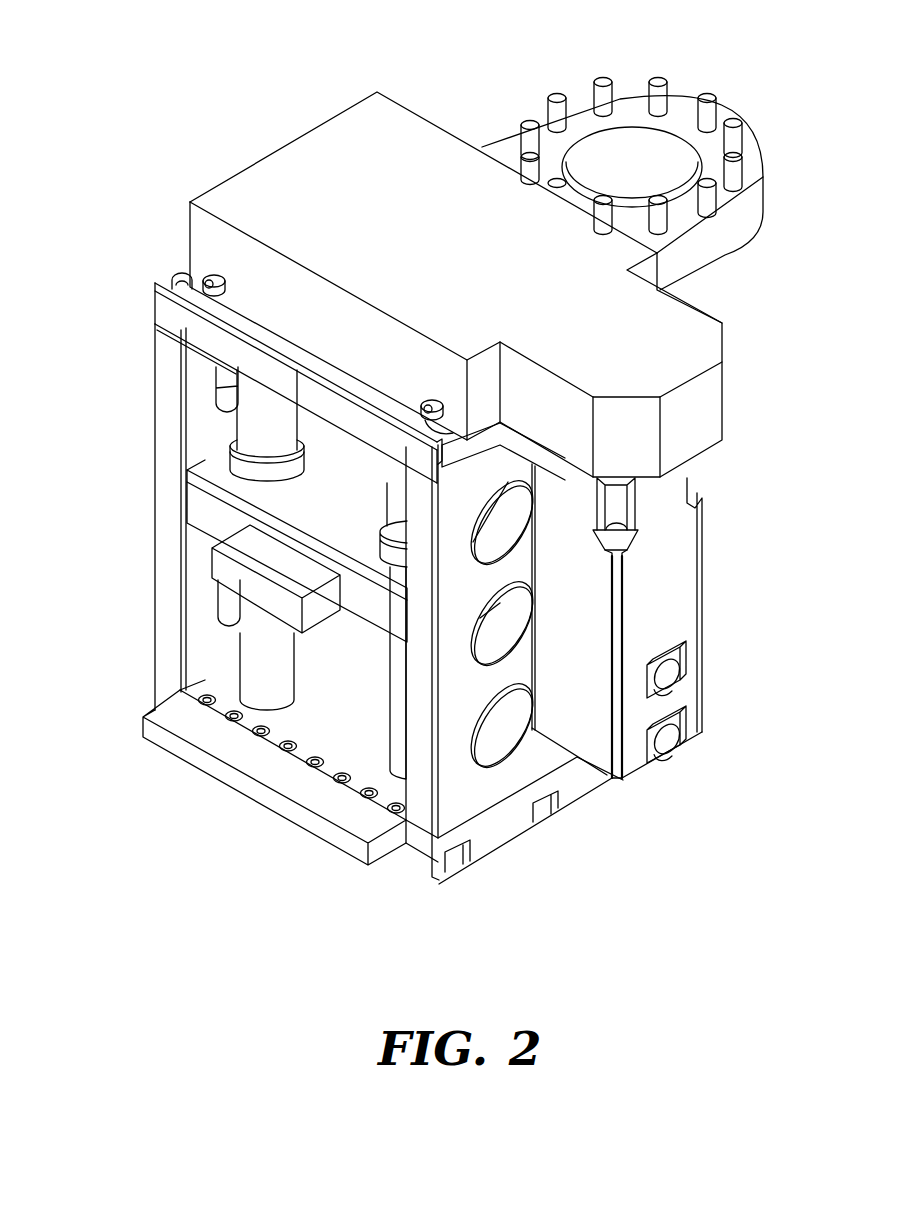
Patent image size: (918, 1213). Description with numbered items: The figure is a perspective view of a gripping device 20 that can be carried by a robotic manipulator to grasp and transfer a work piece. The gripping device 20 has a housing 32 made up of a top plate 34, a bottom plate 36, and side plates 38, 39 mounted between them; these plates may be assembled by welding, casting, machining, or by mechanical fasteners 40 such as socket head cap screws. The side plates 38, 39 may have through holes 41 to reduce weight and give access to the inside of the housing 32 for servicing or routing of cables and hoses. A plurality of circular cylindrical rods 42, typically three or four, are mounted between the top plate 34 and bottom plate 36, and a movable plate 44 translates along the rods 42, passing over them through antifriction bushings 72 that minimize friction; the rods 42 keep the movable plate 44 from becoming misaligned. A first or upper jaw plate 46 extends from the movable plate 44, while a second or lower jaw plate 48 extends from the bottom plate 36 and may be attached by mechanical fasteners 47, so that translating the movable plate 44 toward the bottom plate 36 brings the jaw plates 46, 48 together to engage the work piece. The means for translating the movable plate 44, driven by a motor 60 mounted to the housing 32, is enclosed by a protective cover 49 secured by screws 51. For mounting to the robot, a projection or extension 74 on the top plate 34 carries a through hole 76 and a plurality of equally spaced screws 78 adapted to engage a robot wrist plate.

The gripping device 20 is at (668, 878).
The housing 32 is at (128, 515).
The top plate 34 is at (160, 310).
The bottom plate 36 is at (500, 831).
The side plate 38 is at (163, 445).
The side plate 39 is at (473, 512).
The mechanical fasteners 40 is at (179, 272).
The through holes 41 is at (215, 378).
The rods 42 is at (286, 679).
The movable plate 44 is at (352, 619).
The first or upper jaw plate 46 is at (320, 603).
The mechanical fasteners 47 is at (253, 733).
The second or lower jaw plate 48 is at (361, 851).
The protective cover 49 is at (297, 155).
The screws 51 is at (226, 283).
The motor 60 is at (692, 589).
The bushings 72 is at (302, 464).
The projection or extension 74 is at (786, 107).
The through hole 76 is at (674, 130).
The screws 78 is at (558, 92).